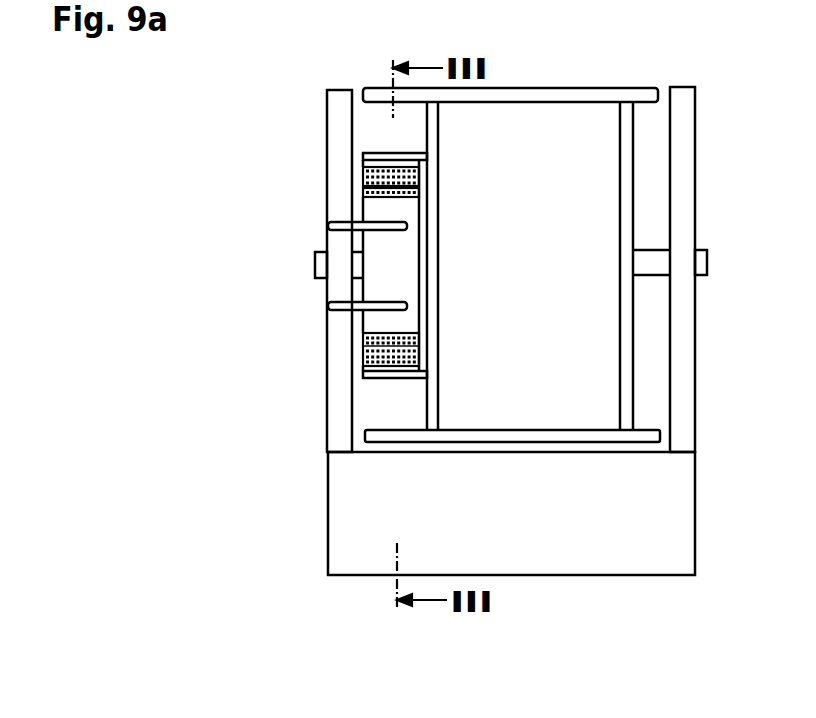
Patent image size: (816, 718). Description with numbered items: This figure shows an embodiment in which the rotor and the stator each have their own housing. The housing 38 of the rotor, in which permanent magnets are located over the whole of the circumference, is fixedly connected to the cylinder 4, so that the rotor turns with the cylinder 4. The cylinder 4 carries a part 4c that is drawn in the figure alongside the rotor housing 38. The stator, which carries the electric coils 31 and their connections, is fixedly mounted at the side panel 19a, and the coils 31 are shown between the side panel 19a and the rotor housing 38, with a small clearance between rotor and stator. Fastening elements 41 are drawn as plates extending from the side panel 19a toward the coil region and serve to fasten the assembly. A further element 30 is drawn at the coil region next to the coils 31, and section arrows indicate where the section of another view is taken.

The cylinder 4 is at (577, 120).
The partition wall 4c is at (438, 134).
The coil 30 is at (363, 178).
The electric coils 31 is at (363, 194).
The fastening elements 41 is at (328, 226).
The side panel 19a is at (338, 402).
The housing of the rotor 38 is at (407, 370).